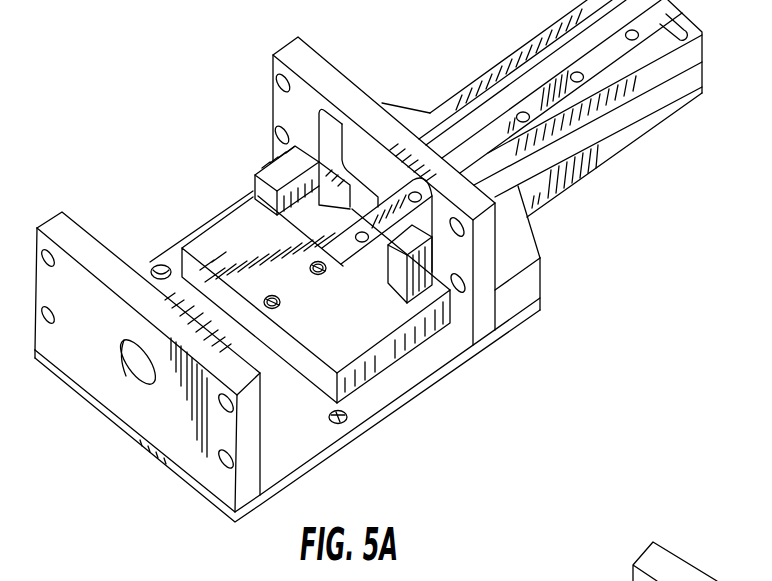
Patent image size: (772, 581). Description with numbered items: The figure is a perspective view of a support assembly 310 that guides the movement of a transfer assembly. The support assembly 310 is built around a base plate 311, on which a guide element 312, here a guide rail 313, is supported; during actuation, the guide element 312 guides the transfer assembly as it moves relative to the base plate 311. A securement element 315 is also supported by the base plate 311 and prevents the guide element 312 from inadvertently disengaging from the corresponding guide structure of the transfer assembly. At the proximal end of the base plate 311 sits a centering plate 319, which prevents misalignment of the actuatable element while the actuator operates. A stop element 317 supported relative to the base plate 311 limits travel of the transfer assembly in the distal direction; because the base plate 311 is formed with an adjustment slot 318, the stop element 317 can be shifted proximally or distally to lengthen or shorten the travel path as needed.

The support assembly 310 is at (110, 114).
The base plate 311 is at (460, 357).
The guide element 312 is at (535, 60).
The guide rail 313 is at (615, 55).
The securement element 315 is at (487, 225).
The stop element 317 is at (253, 182).
The adjustment slot 318 is at (261, 348).
The centering plate 319 is at (87, 357).